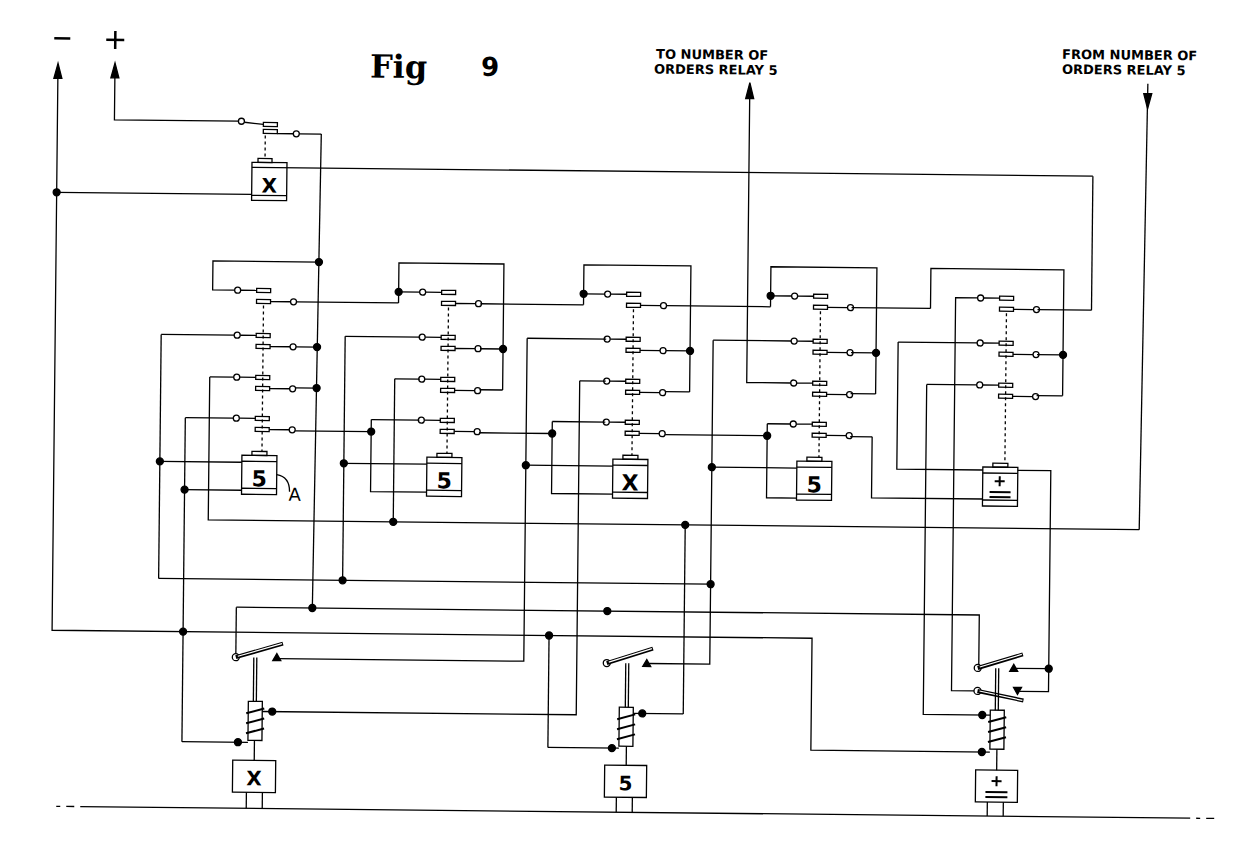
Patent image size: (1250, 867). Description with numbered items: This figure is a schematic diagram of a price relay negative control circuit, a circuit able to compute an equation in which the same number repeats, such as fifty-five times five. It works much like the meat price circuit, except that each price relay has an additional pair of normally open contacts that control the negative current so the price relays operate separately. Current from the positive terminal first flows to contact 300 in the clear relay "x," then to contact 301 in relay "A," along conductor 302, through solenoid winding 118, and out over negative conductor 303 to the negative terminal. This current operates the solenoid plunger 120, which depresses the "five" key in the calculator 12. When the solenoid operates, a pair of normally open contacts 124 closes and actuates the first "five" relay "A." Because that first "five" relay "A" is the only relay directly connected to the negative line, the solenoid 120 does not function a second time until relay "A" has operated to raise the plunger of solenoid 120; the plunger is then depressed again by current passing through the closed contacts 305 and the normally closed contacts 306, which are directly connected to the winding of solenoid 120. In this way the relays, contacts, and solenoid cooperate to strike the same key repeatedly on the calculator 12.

The contact 300 is at (282, 130).
The negative conductor 303 is at (55, 139).
The closed contacts 305 is at (275, 297).
The contact 301 is at (273, 387).
The conductor 302 is at (209, 394).
The normally closed contacts 306 is at (456, 388).
The solenoid plunger 120 is at (621, 712).
The solenoid winding 118 is at (641, 729).
The normally open contacts 124 is at (641, 666).
The calculator 12 is at (803, 847).